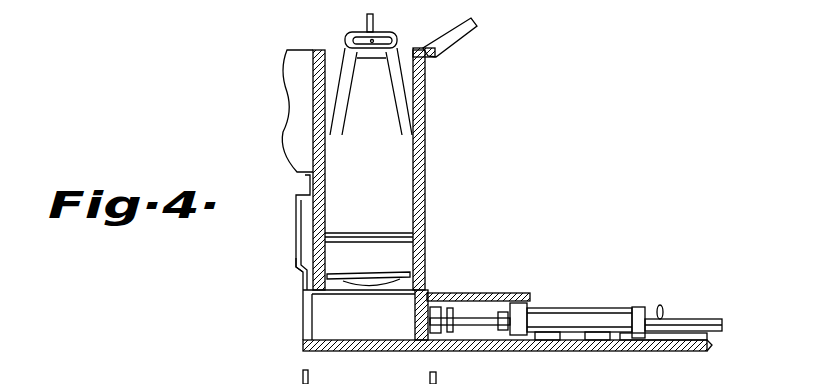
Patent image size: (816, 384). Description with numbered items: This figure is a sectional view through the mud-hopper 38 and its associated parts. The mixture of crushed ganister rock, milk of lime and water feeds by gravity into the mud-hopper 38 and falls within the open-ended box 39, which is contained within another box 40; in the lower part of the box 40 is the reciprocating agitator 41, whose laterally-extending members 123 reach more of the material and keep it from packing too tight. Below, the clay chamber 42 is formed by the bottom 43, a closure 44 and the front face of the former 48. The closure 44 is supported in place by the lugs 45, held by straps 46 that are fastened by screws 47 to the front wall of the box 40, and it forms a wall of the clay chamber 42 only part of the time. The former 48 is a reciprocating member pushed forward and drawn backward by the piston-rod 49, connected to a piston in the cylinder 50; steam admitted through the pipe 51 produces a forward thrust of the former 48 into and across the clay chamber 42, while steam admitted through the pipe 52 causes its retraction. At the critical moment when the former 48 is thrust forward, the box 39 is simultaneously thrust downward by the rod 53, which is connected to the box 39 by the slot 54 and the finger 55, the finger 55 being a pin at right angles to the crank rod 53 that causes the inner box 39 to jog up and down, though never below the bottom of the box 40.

The mud-hopper 38 is at (445, 35).
The open-ended box 39 is at (412, 152).
The box 40 is at (425, 197).
The reciprocating agitator 41 is at (381, 265).
The clay chamber 42 is at (363, 311).
The bottom 43 is at (405, 352).
The closure 44 is at (307, 310).
The lugs 45 is at (297, 263).
The straps 46 is at (296, 233).
The screws 47 is at (305, 186).
The former 48 is at (425, 318).
The piston-rod 49 is at (480, 316).
The cylinder 50 is at (577, 317).
The pipe 51 is at (685, 317).
The pipe 52 is at (698, 348).
The rod 53 is at (378, 33).
The slot 54 is at (350, 33).
The finger 55 is at (372, 48).
The laterally-extending members 123 is at (413, 275).